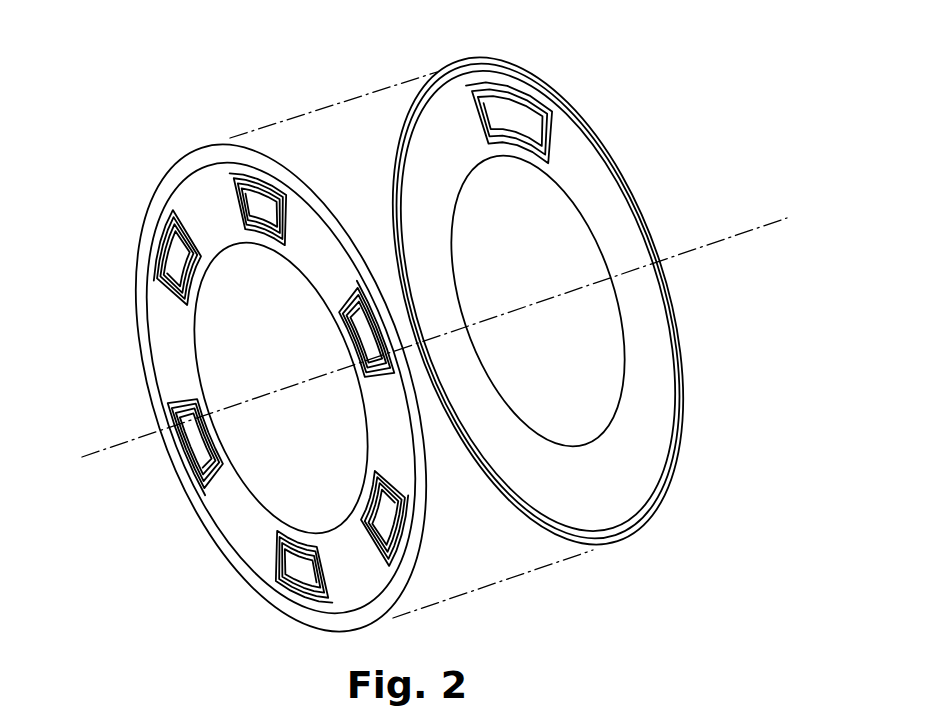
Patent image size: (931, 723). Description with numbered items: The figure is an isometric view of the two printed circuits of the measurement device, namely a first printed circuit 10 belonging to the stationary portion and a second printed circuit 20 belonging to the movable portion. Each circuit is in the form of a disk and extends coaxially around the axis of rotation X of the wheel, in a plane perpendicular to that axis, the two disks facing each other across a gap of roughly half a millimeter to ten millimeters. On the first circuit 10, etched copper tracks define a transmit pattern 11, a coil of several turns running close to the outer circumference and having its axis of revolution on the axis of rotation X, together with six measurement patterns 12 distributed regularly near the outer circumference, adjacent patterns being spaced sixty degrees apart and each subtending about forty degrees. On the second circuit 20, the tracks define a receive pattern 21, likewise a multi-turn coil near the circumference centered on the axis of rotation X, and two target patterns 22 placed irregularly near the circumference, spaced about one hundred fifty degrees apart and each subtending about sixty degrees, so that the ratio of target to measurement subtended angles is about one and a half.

The first printed circuit 10 is at (253, 533).
The transmit pattern 11 is at (200, 172).
The measurement pattern 12 is at (172, 299).
The second printed circuit 20 is at (642, 467).
The receive pattern 21 is at (462, 80).
The target pattern 22 is at (562, 165).
The axis of rotation X is at (775, 217).